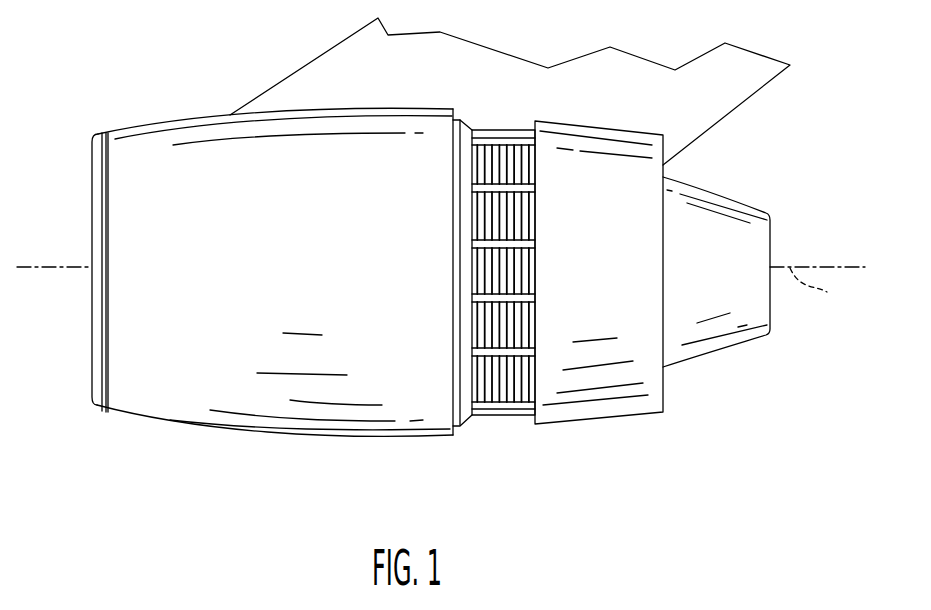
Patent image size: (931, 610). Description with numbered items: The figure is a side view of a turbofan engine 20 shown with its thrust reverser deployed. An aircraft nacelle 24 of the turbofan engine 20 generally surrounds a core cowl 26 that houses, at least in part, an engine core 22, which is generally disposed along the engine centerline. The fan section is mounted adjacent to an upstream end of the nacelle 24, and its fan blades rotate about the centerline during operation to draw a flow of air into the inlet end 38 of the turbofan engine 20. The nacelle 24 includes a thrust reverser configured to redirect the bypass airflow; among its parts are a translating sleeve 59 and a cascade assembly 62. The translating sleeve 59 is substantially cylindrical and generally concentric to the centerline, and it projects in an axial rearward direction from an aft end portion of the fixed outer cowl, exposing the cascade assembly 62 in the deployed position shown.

The turbofan engine 20 is at (127, 82).
The engine core 22 is at (666, 375).
The aircraft nacelle 24 is at (245, 85).
The core cowl 26 is at (723, 196).
The inlet end 38 is at (92, 381).
The translating sleeve 59 is at (599, 127).
The cascade assembly 62 is at (495, 425).